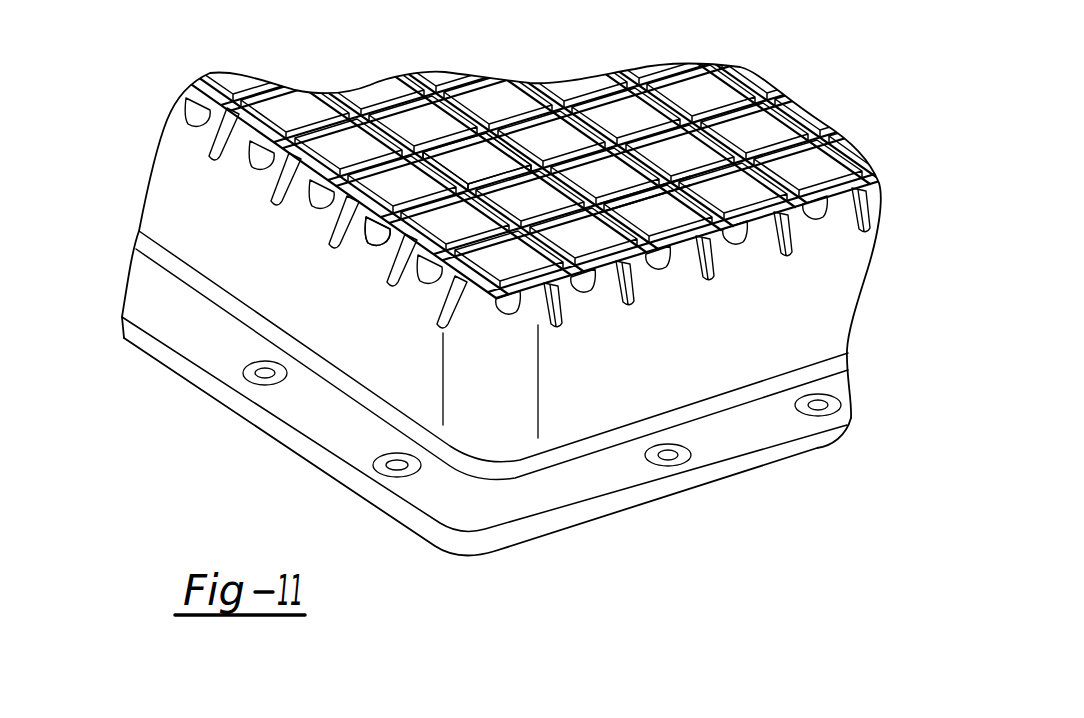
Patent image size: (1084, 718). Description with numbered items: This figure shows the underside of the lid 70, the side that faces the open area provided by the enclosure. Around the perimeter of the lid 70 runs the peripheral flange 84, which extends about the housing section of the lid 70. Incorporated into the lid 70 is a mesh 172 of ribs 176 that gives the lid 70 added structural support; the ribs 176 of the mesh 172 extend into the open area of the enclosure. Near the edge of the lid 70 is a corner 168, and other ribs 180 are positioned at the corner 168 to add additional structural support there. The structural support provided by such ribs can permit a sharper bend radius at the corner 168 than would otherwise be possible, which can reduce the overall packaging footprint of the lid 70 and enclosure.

The lid 70 is at (172, 157).
The peripheral flange 84 is at (207, 336).
The corner 168 is at (247, 187).
The mesh 172 is at (637, 206).
The ribs 176 is at (518, 183).
The other ribs 180 is at (358, 228).